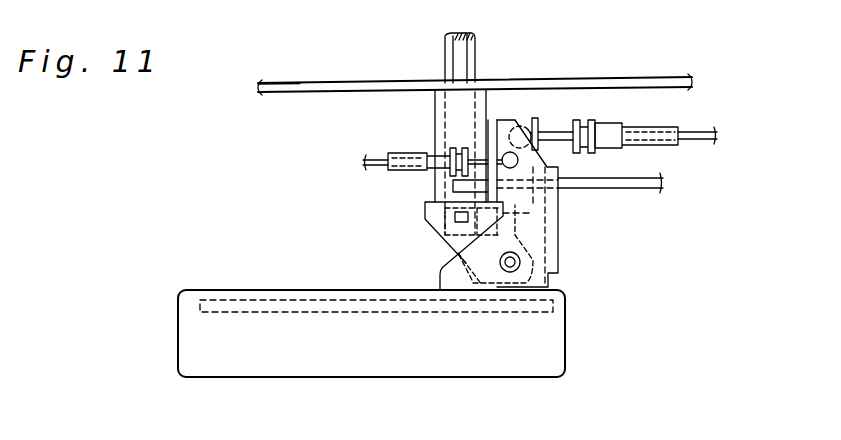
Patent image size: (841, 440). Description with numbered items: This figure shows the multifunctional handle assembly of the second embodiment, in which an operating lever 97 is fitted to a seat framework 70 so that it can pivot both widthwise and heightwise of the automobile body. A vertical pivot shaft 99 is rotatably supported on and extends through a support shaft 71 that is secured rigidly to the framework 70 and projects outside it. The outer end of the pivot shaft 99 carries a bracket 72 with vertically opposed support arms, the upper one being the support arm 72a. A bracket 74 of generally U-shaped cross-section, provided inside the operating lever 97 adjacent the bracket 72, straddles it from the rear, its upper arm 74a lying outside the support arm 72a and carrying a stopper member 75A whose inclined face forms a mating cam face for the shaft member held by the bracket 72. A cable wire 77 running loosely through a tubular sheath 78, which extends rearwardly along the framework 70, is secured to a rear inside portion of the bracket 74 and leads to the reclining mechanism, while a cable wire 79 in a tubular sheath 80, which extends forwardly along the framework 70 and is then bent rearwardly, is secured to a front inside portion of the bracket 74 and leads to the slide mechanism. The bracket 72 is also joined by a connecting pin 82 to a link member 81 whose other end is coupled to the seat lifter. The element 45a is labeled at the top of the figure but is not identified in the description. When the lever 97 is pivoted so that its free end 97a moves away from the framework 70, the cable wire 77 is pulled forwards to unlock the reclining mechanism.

The guide rail 45a is at (265, 42).
The seat framework 70 is at (628, 81).
The support shaft 71 is at (470, 52).
The bracket 72 is at (424, 216).
The upper support arm 72a is at (477, 278).
The bracket 74 is at (538, 243).
The upper arm 74a is at (537, 213).
The stopper member 75A is at (520, 261).
The cable wire 77 is at (553, 130).
The tubular sheath 78 is at (660, 124).
The cable wire 79 is at (372, 167).
The tubular sheath 80 is at (394, 153).
The link member 81 is at (643, 180).
The connecting pin 82 is at (457, 179).
The operating lever 97 is at (328, 363).
The free end 97a is at (182, 350).
The vertical pivot shaft 99 is at (435, 117).